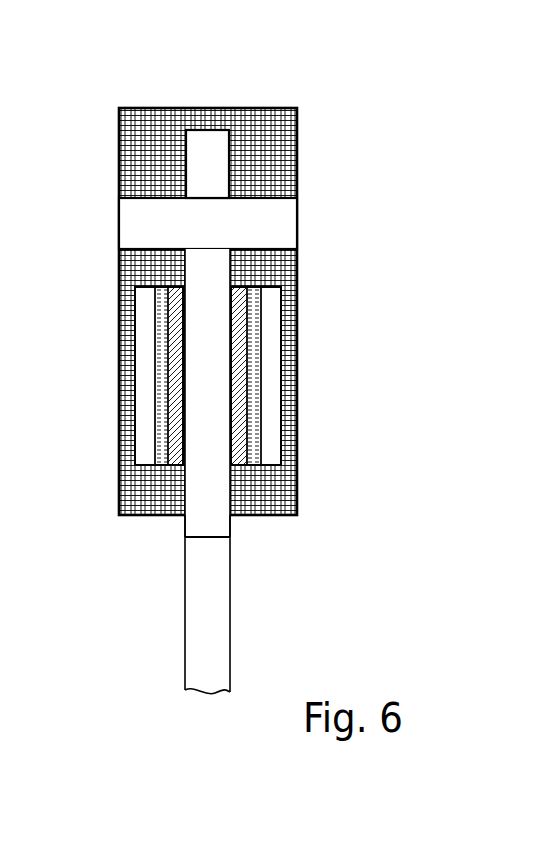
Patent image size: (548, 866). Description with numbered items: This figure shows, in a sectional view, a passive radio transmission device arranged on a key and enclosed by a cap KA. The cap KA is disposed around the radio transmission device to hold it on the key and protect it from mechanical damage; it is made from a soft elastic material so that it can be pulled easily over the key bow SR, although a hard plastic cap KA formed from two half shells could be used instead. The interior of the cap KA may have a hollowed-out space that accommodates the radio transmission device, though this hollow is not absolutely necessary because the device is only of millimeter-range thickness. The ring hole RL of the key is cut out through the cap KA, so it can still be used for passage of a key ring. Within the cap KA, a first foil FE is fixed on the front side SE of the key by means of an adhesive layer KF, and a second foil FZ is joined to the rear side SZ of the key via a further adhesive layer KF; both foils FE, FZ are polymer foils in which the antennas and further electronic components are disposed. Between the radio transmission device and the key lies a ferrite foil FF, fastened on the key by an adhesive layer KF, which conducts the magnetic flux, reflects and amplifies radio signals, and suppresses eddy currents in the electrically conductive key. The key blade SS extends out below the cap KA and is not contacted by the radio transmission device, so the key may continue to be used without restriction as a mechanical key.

The key bow SR is at (204, 158).
The cap KA is at (265, 147).
The ring hole RL is at (259, 220).
The adhesive layer KF is at (178, 318).
The ferrite foil FF is at (163, 378).
The first foil FE is at (143, 427).
The second foil FZ is at (270, 427).
The front side SE is at (173, 538).
The rear side SZ is at (242, 538).
The key blade SS is at (205, 633).